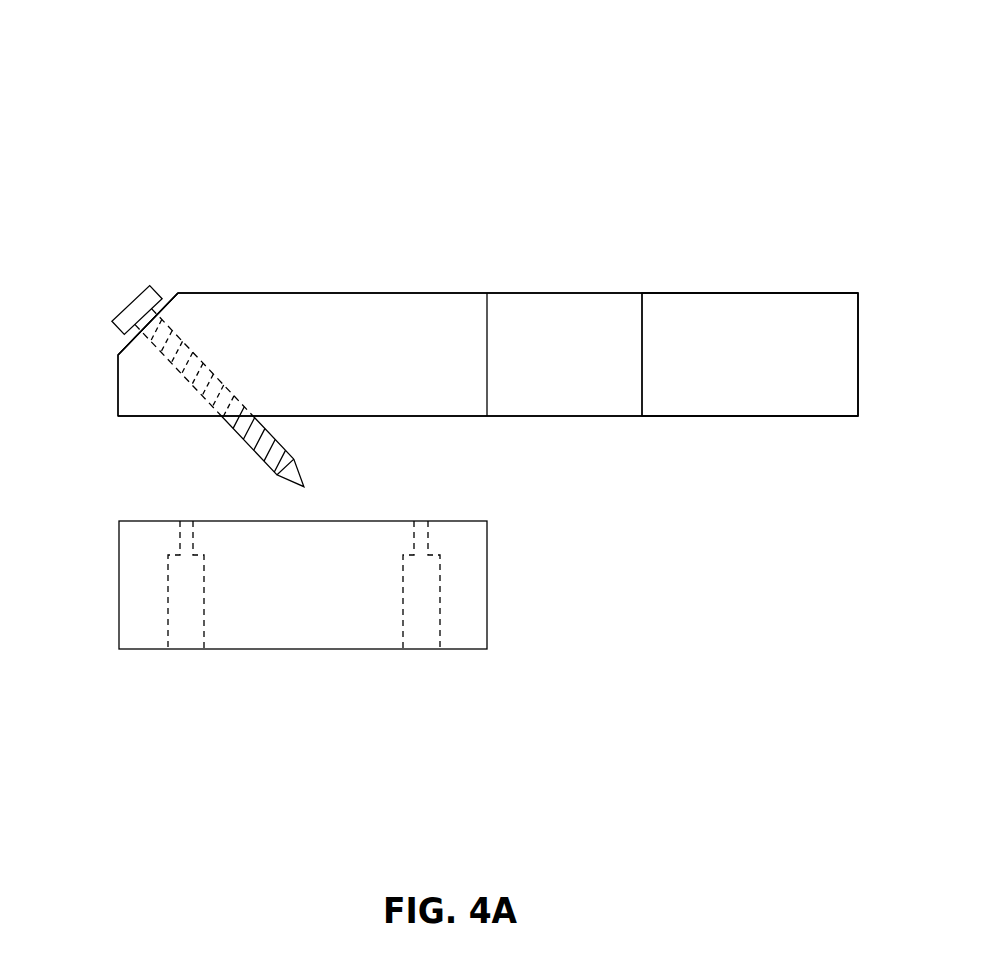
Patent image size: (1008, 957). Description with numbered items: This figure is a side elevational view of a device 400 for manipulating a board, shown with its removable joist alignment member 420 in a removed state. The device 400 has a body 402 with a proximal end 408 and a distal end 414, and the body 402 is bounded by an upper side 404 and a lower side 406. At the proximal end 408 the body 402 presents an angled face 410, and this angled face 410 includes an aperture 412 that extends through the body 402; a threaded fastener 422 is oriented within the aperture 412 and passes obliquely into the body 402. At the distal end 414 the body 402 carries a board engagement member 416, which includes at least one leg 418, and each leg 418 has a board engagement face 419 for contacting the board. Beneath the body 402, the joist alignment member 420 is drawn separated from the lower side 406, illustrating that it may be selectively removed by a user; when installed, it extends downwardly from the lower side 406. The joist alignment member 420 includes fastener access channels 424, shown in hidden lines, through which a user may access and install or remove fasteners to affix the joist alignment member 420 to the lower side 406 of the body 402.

The device 400 is at (331, 112).
The body 402 is at (285, 238).
The upper side 404 is at (412, 293).
The lower side 406 is at (448, 418).
The proximal end 408 is at (103, 205).
The angled face 410 is at (122, 350).
The aperture 412 is at (172, 363).
The distal end 414 is at (766, 212).
The board engagement member 416 is at (716, 463).
The leg 418 is at (779, 392).
The board engagement face 419 is at (858, 367).
The joist alignment member 420 is at (320, 638).
The threaded fastener 422 is at (140, 303).
The fastener access channel 424 is at (189, 635).